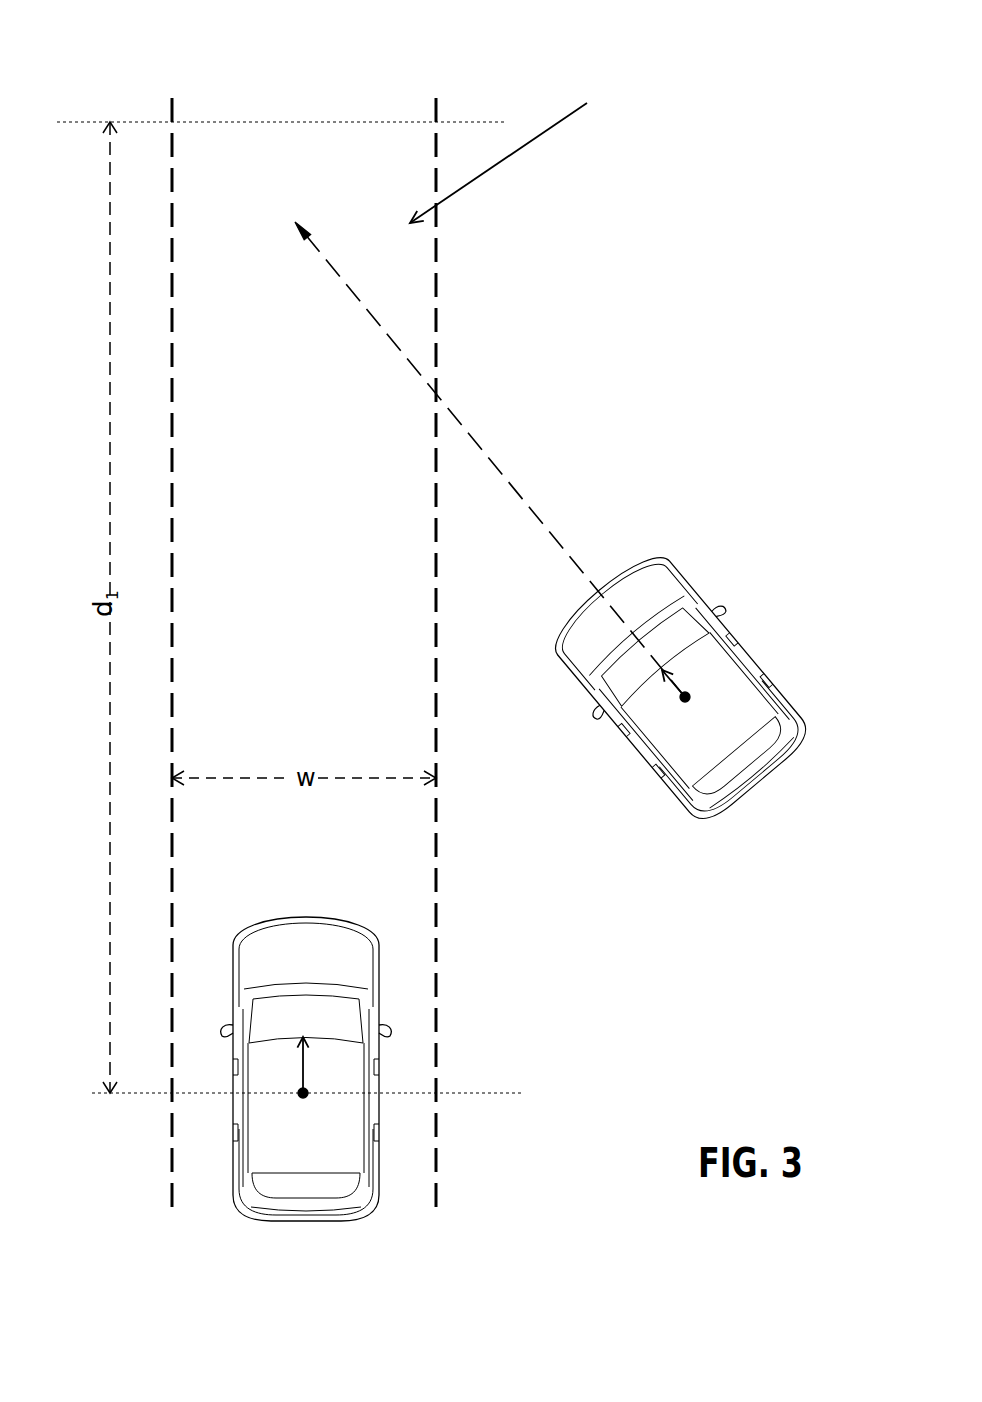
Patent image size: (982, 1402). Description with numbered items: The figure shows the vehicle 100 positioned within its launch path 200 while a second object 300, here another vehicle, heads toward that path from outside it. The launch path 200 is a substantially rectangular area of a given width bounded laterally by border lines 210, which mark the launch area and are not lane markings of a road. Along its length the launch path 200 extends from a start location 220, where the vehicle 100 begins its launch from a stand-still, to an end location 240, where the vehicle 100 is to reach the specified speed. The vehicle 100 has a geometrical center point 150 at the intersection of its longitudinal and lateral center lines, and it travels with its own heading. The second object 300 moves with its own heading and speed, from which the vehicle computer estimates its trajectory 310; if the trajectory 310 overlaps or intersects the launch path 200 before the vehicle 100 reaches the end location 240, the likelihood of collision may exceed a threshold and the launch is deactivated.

The vehicle 100 is at (326, 1171).
The geometrical center point 150 is at (313, 1100).
The launch path 200 is at (532, 149).
The border lines 210 is at (433, 630).
The start location 220 is at (203, 1095).
The end location 240 is at (242, 117).
The second object 300 is at (743, 749).
The trajectory 310 is at (460, 419).